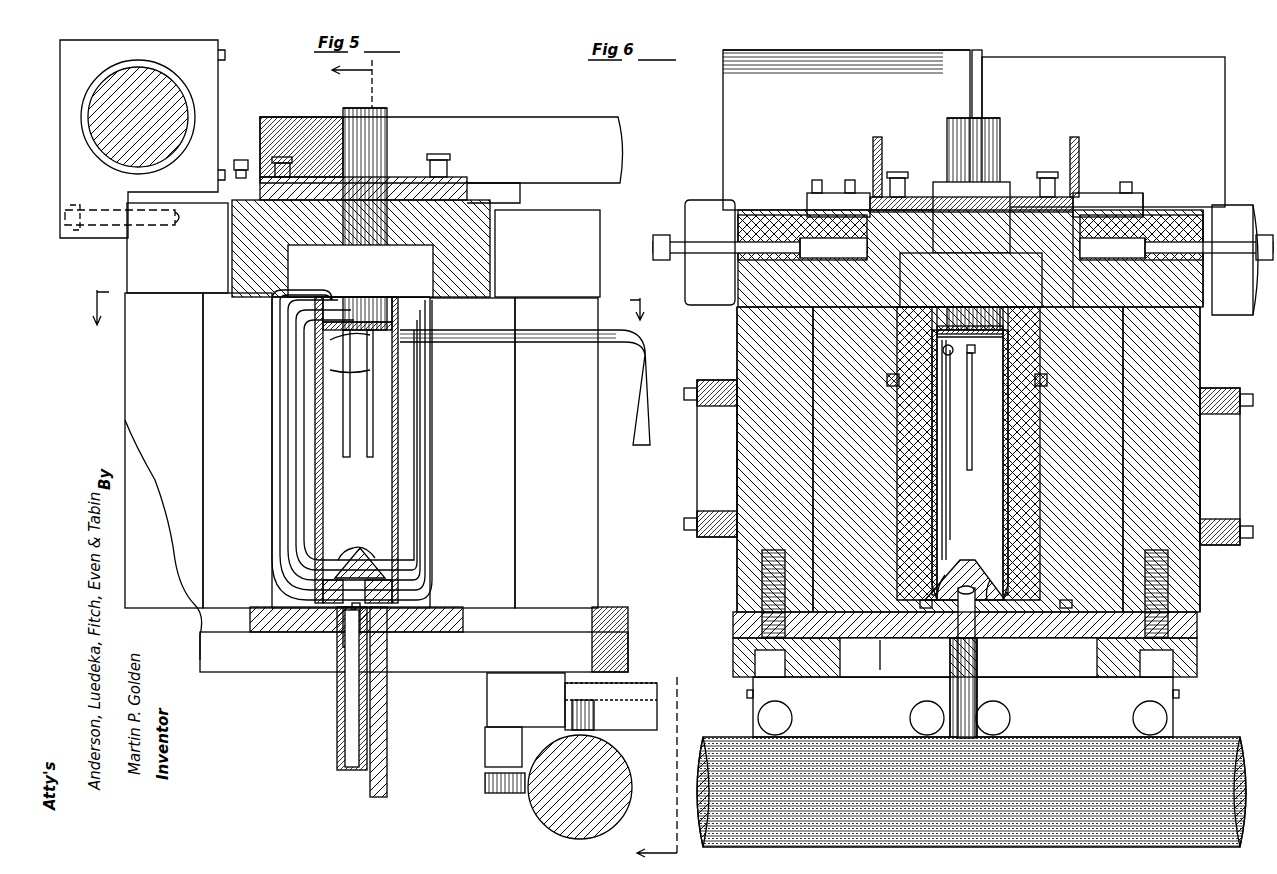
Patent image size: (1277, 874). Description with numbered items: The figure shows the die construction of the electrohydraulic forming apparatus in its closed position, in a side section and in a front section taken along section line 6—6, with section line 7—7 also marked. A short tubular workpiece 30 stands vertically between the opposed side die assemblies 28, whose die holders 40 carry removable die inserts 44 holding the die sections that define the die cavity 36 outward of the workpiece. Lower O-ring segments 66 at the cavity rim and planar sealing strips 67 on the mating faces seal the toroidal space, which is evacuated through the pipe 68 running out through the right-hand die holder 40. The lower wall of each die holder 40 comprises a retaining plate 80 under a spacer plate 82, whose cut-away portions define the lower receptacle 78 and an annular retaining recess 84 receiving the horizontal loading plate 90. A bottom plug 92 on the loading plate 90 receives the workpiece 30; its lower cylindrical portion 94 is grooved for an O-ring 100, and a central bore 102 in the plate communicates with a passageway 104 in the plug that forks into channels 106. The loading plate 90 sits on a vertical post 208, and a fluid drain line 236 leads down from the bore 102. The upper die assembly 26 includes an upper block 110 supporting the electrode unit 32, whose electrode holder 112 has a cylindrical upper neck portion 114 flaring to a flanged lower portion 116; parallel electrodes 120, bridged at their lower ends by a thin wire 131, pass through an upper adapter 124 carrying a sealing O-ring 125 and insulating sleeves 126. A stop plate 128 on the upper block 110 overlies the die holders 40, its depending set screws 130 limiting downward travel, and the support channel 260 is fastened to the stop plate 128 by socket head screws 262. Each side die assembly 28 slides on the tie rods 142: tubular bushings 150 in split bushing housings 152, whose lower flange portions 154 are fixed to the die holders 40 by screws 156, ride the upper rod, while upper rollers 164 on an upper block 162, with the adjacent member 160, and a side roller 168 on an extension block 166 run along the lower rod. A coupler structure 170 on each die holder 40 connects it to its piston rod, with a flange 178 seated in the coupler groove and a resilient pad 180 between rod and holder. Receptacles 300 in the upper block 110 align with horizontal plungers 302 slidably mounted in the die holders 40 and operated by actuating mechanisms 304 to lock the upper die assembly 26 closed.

In FIG. 5, the section line 6— 6 is at (513, 462).
In FIG. 5, the section line 7— 7 is at (367, 298).
In FIG. 6, the upper die assembly 26 is at (1108, 208).
In FIG. 6, the side die assemblies 28 is at (737, 326).
In FIG. 6, the tubular workpiece 30 is at (936, 483).
In FIG. 5, the electrode unit 32 is at (390, 100).
In FIG. 6, the electrode unit 32 is at (1009, 110).
In FIG. 5, the die cavity 36 is at (316, 474).
In FIG. 6, the die cavity 36 is at (1015, 450).
In FIG. 5, the die holders 40 is at (361, 450).
In FIG. 6, the die holders 40 is at (1200, 350).
In FIG. 5, the die inserts 44 is at (359, 450).
In FIG. 6, the die inserts 44 is at (968, 459).
In FIG. 5, the lower O-ring segment 66 is at (313, 633).
In FIG. 5, the sealing strips 67 is at (414, 499).
In FIG. 5, the pipe 68 is at (618, 350).
In FIG. 6, the lower receptacle 78 is at (976, 653).
In FIG. 5, the retaining plate 80 is at (414, 639).
In FIG. 6, the retaining plate 80 is at (732, 656).
In FIG. 6, the spacer plate 82 is at (732, 623).
In FIG. 5, the annular retaining recess 84 is at (471, 607).
In FIG. 6, the annular retaining recess 84 is at (1068, 610).
In FIG. 5, the loading plate 90 is at (260, 633).
In FIG. 6, the loading plate 90 is at (880, 668).
In FIG. 5, the bottom plug 92 is at (362, 548).
In FIG. 6, the bottom plug 92 is at (967, 560).
In FIG. 6, the lower vertical cylindrical portion 94 is at (980, 583).
In FIG. 5, the O-ring 100 is at (320, 595).
In FIG. 6, the O-ring 100 is at (920, 598).
In FIG. 5, the central bore 102 is at (355, 635).
In FIG. 6, the central bore 102 is at (950, 650).
In FIG. 5, the central passageway 104 is at (395, 589).
In FIG. 6, the central passageway 104 is at (943, 575).
In FIG. 5, the channels 106 is at (336, 560).
In FIG. 6, the upper block 110 is at (1083, 210).
In FIG. 5, the electrode holder 112 is at (354, 108).
In FIG. 6, the electrode holder 112 is at (947, 118).
In FIG. 5, the upper neck portion 114 is at (328, 179).
In FIG. 6, the upper neck portion 114 is at (971, 217).
In FIG. 5, the flanged lower portion 116 is at (360, 271).
In FIG. 6, the flanged lower portion 116 is at (971, 280).
In FIG. 5, the electrodes 120 is at (367, 372).
In FIG. 6, the electrodes 120 is at (975, 420).
In FIG. 5, the upper adapter 124 is at (357, 313).
In FIG. 6, the upper adapter 124 is at (970, 320).
In FIG. 6, the sealing O-ring 125 is at (1003, 332).
In FIG. 5, the insulating sleeves 126 is at (362, 333).
In FIG. 6, the insulating sleeves 126 is at (975, 350).
In FIG. 6, the stop plate 128 is at (1150, 202).
In FIG. 6, the set screws 130 is at (813, 192).
In FIG. 5, the thin wire 131 is at (360, 458).
In FIG. 5, the tie rods 142 is at (134, 78).
In FIG. 6, the tie rods 142 is at (978, 70).
In FIG. 5, the tubular bushings 150 is at (178, 54).
In FIG. 5, the bushing housing 152 is at (82, 42).
In FIG. 6, the bushing housing 152 is at (974, 130).
In FIG. 5, the lower flange portion 154 is at (87, 233).
In FIG. 5, the screws 156 is at (82, 238).
In FIG. 5, the bracket 160 is at (487, 706).
In FIG. 6, the bracket 160 is at (750, 700).
In FIG. 5, the upper block 162 is at (526, 700).
In FIG. 6, the upper block 162 is at (963, 707).
In FIG. 5, the upper rollers 164 is at (590, 709).
In FIG. 6, the upper rollers 164 is at (753, 732).
In FIG. 5, the extension block 166 is at (485, 748).
In FIG. 5, the side roller 168 is at (495, 793).
In FIG. 6, the coupler structure 170 is at (698, 380).
In FIG. 6, the flange 178 is at (693, 483).
In FIG. 6, the pad 180 is at (715, 454).
In FIG. 5, the vertical post 208 is at (387, 782).
In FIG. 5, the fluid drain line 236 is at (330, 750).
In FIG. 5, the support channel 260 is at (441, 150).
In FIG. 6, the support channel 260 is at (885, 156).
In FIG. 5, the socket head screws 262 is at (438, 160).
In FIG. 6, the socket head screws 262 is at (900, 177).
In FIG. 6, the receptacles 300 is at (850, 203).
In FIG. 6, the plungers 302 is at (755, 238).
In FIG. 6, the actuating mechanism 304 is at (1232, 321).